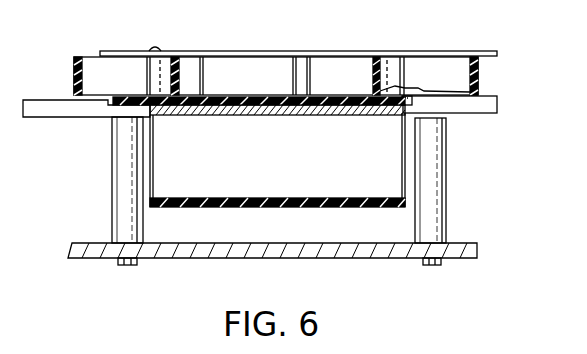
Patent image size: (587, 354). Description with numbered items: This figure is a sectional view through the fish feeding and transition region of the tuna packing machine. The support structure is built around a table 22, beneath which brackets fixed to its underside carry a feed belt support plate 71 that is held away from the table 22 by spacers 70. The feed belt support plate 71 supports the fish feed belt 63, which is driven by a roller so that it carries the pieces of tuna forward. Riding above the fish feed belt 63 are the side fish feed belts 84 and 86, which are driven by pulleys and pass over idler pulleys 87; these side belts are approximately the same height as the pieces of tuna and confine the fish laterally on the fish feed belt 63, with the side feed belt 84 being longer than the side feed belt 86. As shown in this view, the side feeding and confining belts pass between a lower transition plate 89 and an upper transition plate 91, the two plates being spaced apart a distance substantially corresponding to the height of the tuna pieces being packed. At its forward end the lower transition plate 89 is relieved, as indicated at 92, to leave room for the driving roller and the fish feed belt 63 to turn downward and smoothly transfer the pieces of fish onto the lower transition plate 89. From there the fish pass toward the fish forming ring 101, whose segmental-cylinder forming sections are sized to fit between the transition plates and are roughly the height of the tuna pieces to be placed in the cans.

The table 22 is at (181, 258).
The fish feed belt 63 is at (262, 114).
The spacers 70 is at (112, 150).
The feed belt support plate 71 is at (328, 113).
The side fish feed belt 84 is at (478, 78).
The side fish feed belt 86 is at (74, 75).
The idler pulleys 87 is at (147, 78).
The lower transition plate 89 is at (465, 113).
The upper transition plate 91 is at (292, 51).
The relief 92 is at (401, 110).
The fish forming ring 101 is at (231, 73).